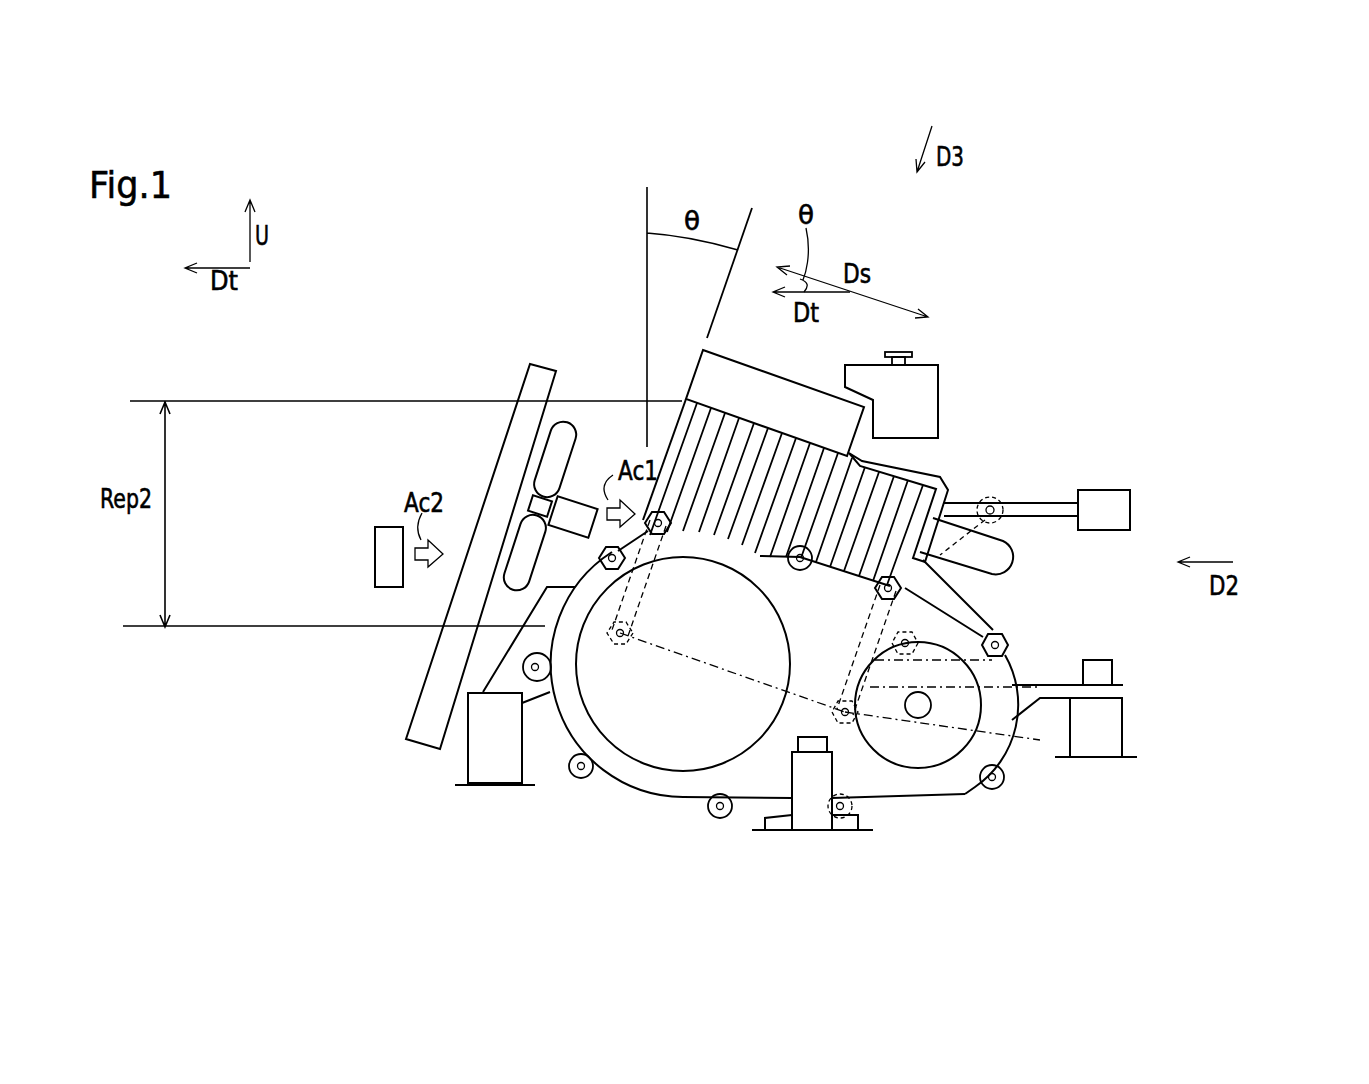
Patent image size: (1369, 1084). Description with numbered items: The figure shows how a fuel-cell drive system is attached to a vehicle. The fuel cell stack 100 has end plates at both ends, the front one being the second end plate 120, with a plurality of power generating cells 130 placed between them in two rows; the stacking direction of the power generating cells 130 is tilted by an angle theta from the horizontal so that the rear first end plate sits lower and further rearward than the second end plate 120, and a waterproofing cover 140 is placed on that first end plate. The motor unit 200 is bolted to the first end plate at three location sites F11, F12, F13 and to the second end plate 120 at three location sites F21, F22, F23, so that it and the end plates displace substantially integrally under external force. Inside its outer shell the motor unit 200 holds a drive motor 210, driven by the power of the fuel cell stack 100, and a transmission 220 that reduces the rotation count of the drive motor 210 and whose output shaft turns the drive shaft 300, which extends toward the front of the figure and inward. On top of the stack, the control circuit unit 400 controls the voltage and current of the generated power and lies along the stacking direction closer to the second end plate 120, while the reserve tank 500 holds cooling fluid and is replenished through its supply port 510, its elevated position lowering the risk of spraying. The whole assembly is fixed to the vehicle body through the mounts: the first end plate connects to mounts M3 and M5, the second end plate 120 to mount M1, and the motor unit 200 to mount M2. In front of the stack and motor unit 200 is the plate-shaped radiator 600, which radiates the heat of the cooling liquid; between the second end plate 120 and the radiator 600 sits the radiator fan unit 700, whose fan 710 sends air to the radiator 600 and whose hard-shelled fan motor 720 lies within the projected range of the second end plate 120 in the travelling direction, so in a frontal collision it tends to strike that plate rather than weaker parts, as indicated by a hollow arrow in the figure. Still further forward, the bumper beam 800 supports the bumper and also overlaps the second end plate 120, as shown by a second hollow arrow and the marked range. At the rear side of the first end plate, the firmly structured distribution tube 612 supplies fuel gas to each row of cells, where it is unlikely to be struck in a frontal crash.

The fuel cell stack 100 is at (958, 466).
The second end plate 120 is at (688, 440).
The power generating cells 130 is at (792, 447).
The waterproofing cover 140 is at (918, 505).
The motor unit 200 is at (678, 706).
The drive motor 210 is at (667, 753).
The transmission 220 is at (957, 735).
The drive shaft 300 is at (930, 692).
The control circuit unit 400 is at (748, 362).
The reserve tank 500 is at (957, 318).
The supply port 510 is at (900, 348).
The radiator 600 is at (553, 368).
The distribution tube 612 is at (1020, 552).
The radiator fan unit 700 is at (562, 370).
The fan 710 is at (575, 427).
The fan motor 720 is at (570, 498).
The bumper beam 800 is at (375, 527).
The mount M1 is at (467, 750).
The mount M2 is at (818, 772).
The mount M3 is at (1117, 745).
The mount M5 is at (1100, 492).
The location site F11 is at (905, 585).
The location site F12 is at (837, 712).
The location site F13 is at (1006, 643).
The location site F21 is at (663, 534).
The location site F22 is at (600, 552).
The location site F23 is at (620, 646).